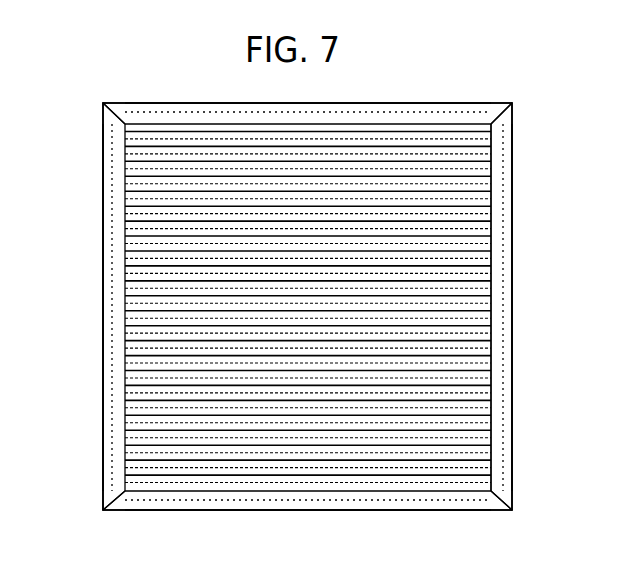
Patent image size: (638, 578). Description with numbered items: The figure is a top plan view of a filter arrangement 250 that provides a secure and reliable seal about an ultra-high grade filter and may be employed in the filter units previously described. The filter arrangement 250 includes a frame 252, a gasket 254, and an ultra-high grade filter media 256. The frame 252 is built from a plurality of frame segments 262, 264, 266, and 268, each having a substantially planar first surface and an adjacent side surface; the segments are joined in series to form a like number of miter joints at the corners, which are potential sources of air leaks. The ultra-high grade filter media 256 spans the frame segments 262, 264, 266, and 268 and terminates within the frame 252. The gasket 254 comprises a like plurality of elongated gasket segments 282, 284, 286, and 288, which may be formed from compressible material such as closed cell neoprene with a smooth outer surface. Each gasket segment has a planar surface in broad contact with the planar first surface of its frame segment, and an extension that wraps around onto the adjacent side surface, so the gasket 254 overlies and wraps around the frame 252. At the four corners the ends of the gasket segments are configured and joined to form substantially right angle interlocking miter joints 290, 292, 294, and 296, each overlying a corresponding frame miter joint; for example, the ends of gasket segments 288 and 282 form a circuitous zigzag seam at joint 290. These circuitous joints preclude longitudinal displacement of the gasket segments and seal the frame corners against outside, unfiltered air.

The filter arrangement 250 is at (537, 178).
The frame 252 is at (102, 187).
The gasket 254 is at (497, 297).
The ultra-high grade filter media 256 is at (308, 307).
The frame segment 262 is at (511, 212).
The frame segment 264 is at (264, 498).
The frame segment 266 is at (103, 274).
The frame segment 268 is at (438, 112).
The gasket segment 282 is at (503, 395).
The gasket segment 284 is at (203, 496).
The gasket segment 286 is at (118, 252).
The gasket segment 288 is at (383, 120).
The interlocking miter joint 290 is at (500, 120).
The interlocking miter joint 292 is at (498, 494).
The interlocking miter joint 294 is at (110, 497).
The interlocking miter joint 296 is at (118, 124).